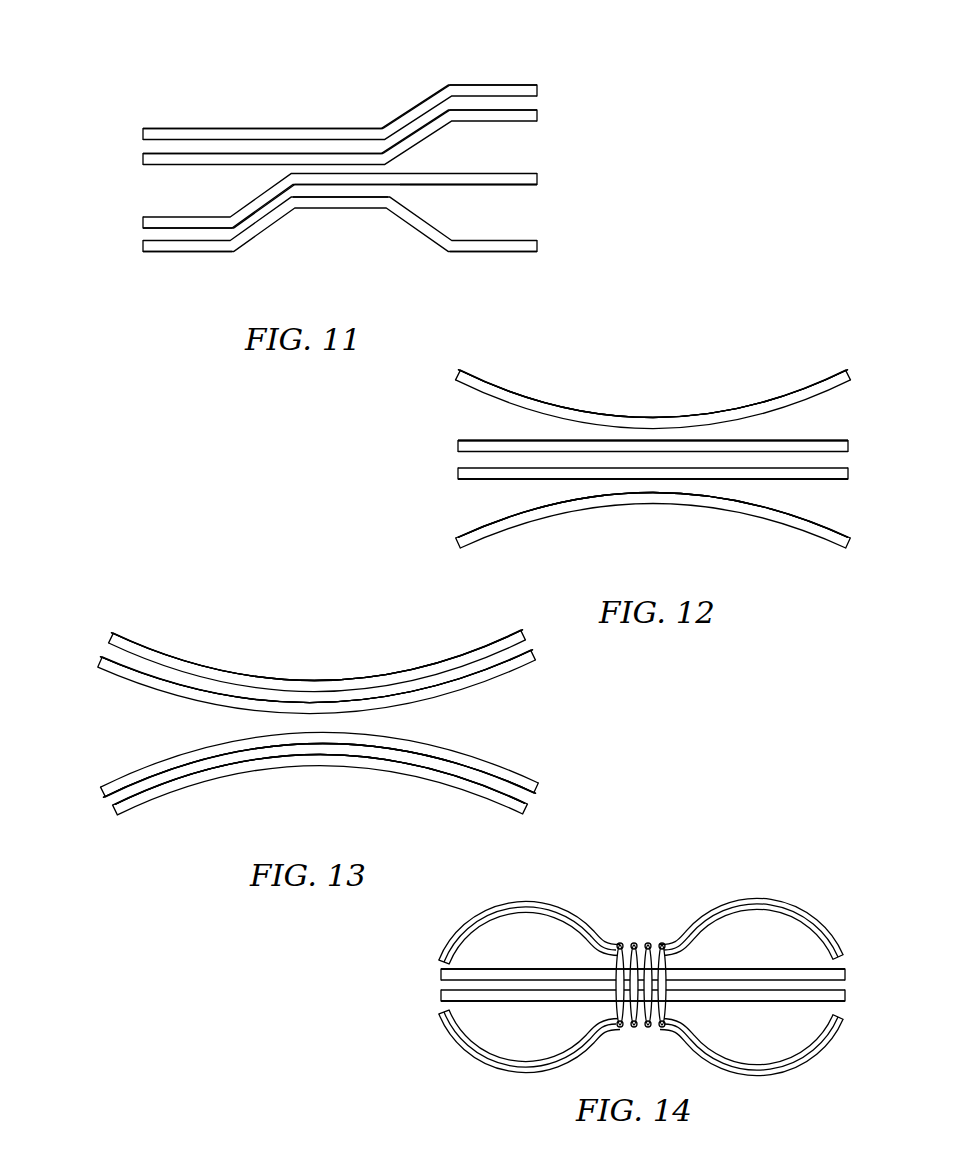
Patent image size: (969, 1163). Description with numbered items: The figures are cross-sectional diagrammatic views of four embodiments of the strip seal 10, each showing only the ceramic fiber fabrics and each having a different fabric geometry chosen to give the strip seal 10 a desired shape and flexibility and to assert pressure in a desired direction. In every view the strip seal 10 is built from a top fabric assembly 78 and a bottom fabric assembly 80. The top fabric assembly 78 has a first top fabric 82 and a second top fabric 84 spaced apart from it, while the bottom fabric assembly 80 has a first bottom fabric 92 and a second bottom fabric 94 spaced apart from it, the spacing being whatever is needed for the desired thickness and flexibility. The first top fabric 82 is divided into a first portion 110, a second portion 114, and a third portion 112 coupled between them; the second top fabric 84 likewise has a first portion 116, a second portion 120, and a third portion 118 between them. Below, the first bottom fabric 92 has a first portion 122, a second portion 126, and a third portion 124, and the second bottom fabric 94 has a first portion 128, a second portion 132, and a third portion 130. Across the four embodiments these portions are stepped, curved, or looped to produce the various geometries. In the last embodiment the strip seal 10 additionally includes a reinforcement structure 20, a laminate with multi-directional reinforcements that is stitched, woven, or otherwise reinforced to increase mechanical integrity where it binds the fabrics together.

In FIG. 11, the strip seal 10 is at (624, 68).
In FIG. 12, the strip seal 10 is at (724, 365).
In FIG. 13, the strip seal 10 is at (259, 609).
In FIG. 14, the strip seal 10 is at (694, 889).
In FIG. 14, the reinforcement structure 20 is at (637, 944).
In FIG. 11, the top fabric assembly 78 is at (128, 145).
In FIG. 12, the top fabric assembly 78 is at (444, 399).
In FIG. 13, the top fabric assembly 78 is at (102, 638).
In FIG. 14, the top fabric assembly 78 is at (428, 964).
In FIG. 11, the bottom fabric assembly 80 is at (128, 232).
In FIG. 12, the bottom fabric assembly 80 is at (444, 520).
In FIG. 13, the bottom fabric assembly 80 is at (98, 808).
In FIG. 14, the bottom fabric assembly 80 is at (428, 1006).
In FIG. 11, the first top fabric 82 is at (540, 88).
In FIG. 12, the first top fabric 82 is at (500, 388).
In FIG. 13, the first top fabric 82 is at (415, 675).
In FIG. 14, the first top fabric 82 is at (818, 927).
In FIG. 11, the second top fabric 84 is at (540, 113).
In FIG. 12, the second top fabric 84 is at (522, 441).
In FIG. 13, the second top fabric 84 is at (526, 665).
In FIG. 14, the second top fabric 84 is at (834, 953).
In FIG. 11, the first bottom fabric 92 is at (540, 176).
In FIG. 12, the first bottom fabric 92 is at (826, 480).
In FIG. 13, the first bottom fabric 92 is at (510, 769).
In FIG. 14, the first bottom fabric 92 is at (832, 1022).
In FIG. 11, the second bottom fabric 94 is at (540, 244).
In FIG. 12, the second bottom fabric 94 is at (828, 548).
In FIG. 13, the second bottom fabric 94 is at (485, 801).
In FIG. 14, the second bottom fabric 94 is at (822, 1030).
In FIG. 11, the first portion of first top fabric 110 is at (185, 128).
In FIG. 12, the first portion of first top fabric 110 is at (472, 371).
In FIG. 13, the first portion of first top fabric 110 is at (160, 650).
In FIG. 14, the first portion of first top fabric 110 is at (461, 929).
In FIG. 11, the third portion of first top fabric 112 is at (346, 128).
In FIG. 12, the third portion of first top fabric 112 is at (633, 418).
In FIG. 13, the third portion of first top fabric 112 is at (300, 682).
In FIG. 14, the third portion of first top fabric 112 is at (618, 944).
In FIG. 11, the second portion of first top fabric 114 is at (460, 86).
In FIG. 12, the second portion of first top fabric 114 is at (825, 377).
In FIG. 13, the second portion of first top fabric 114 is at (405, 668).
In FIG. 14, the second portion of first top fabric 114 is at (775, 904).
In FIG. 11, the first portion of second top fabric 116 is at (229, 153).
In FIG. 12, the first portion of second top fabric 116 is at (510, 442).
In FIG. 13, the first portion of second top fabric 116 is at (192, 683).
In FIG. 14, the first portion of second top fabric 116 is at (518, 968).
In FIG. 11, the third portion of second top fabric 118 is at (367, 153).
In FIG. 12, the third portion of second top fabric 118 is at (703, 440).
In FIG. 13, the third portion of second top fabric 118 is at (325, 708).
In FIG. 14, the third portion of second top fabric 118 is at (667, 944).
In FIG. 11, the second portion of second top fabric 120 is at (496, 110).
In FIG. 12, the second portion of second top fabric 120 is at (795, 440).
In FIG. 13, the second portion of second top fabric 120 is at (495, 661).
In FIG. 14, the second portion of second top fabric 120 is at (757, 968).
In FIG. 11, the first portion of first bottom fabric 122 is at (194, 228).
In FIG. 12, the first portion of first bottom fabric 122 is at (512, 480).
In FIG. 13, the first portion of first bottom fabric 122 is at (128, 789).
In FIG. 14, the first portion of first bottom fabric 122 is at (480, 1003).
In FIG. 11, the third portion of first bottom fabric 124 is at (342, 185).
In FIG. 12, the third portion of first bottom fabric 124 is at (631, 481).
In FIG. 13, the third portion of first bottom fabric 124 is at (287, 746).
In FIG. 14, the third portion of first bottom fabric 124 is at (628, 1028).
In FIG. 11, the second portion of first bottom fabric 126 is at (468, 185).
In FIG. 12, the second portion of first bottom fabric 126 is at (765, 480).
In FIG. 13, the second portion of first bottom fabric 126 is at (410, 760).
In FIG. 14, the second portion of first bottom fabric 126 is at (747, 1002).
In FIG. 11, the first portion of second bottom fabric 128 is at (157, 252).
In FIG. 12, the first portion of second bottom fabric 128 is at (537, 539).
In FIG. 13, the first portion of second bottom fabric 128 is at (185, 790).
In FIG. 14, the first portion of second bottom fabric 128 is at (515, 1068).
In FIG. 11, the third portion of second bottom fabric 130 is at (358, 208).
In FIG. 12, the third portion of second bottom fabric 130 is at (651, 498).
In FIG. 13, the third portion of second bottom fabric 130 is at (320, 767).
In FIG. 14, the third portion of second bottom fabric 130 is at (645, 1028).
In FIG. 11, the second portion of second bottom fabric 132 is at (515, 253).
In FIG. 12, the second portion of second bottom fabric 132 is at (800, 533).
In FIG. 13, the second portion of second bottom fabric 132 is at (445, 786).
In FIG. 14, the second portion of second bottom fabric 132 is at (748, 1071).